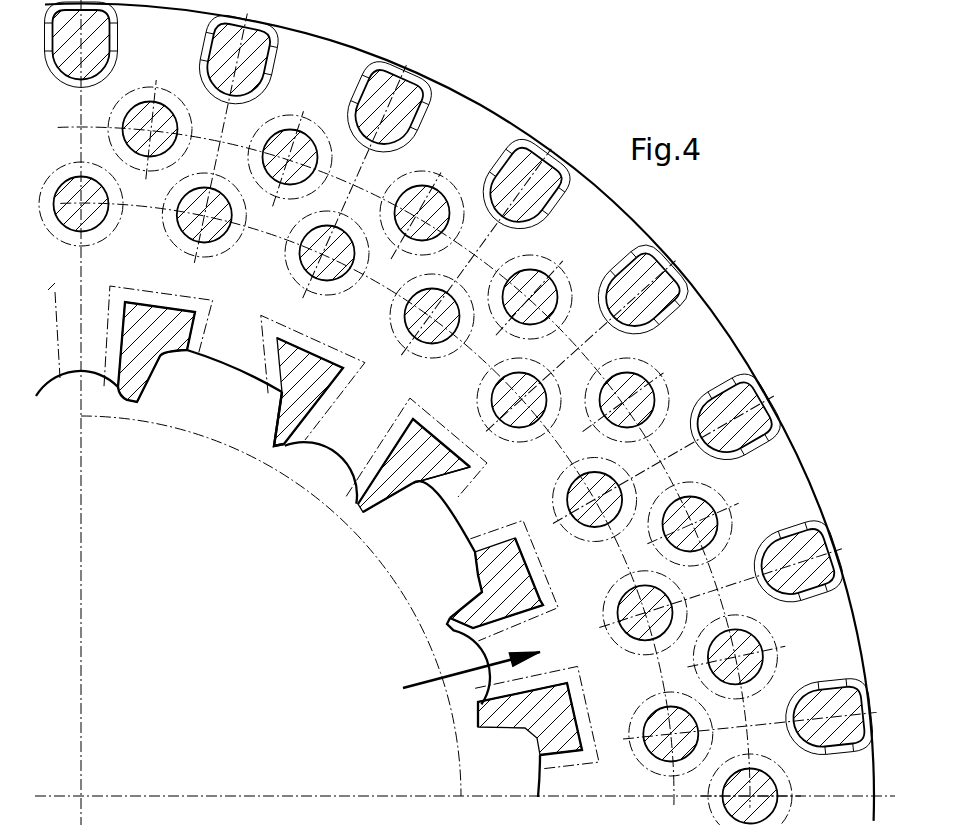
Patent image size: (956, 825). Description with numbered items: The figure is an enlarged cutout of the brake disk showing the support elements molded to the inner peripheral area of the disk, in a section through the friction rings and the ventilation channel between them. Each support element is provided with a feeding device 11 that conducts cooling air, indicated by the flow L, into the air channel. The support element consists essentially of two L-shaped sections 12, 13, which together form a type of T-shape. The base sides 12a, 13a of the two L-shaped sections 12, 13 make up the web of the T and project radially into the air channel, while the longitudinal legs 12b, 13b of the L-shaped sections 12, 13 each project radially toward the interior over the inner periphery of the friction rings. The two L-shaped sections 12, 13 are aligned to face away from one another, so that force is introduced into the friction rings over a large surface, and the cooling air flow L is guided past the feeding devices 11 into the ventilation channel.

The feeding device 11 is at (288, 584).
The L-shaped section 12 is at (252, 413).
The base side of L-shaped section 12a is at (185, 410).
The longitudinal leg of L-shaped section 12b is at (210, 470).
The L-shaped section 13 is at (379, 523).
The base side of L-shaped section 13a is at (390, 569).
The longitudinal leg of L-shaped section 13b is at (326, 547).
The cooling air flow L is at (471, 690).